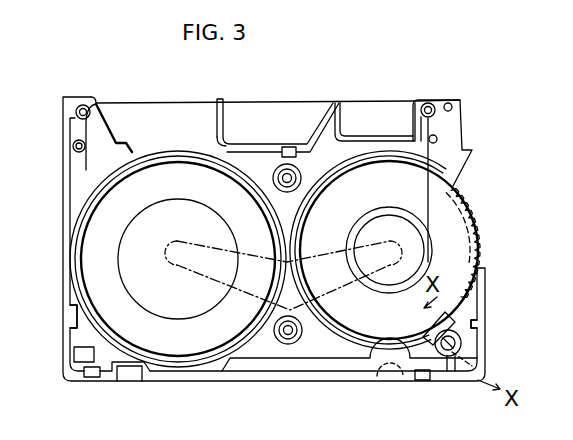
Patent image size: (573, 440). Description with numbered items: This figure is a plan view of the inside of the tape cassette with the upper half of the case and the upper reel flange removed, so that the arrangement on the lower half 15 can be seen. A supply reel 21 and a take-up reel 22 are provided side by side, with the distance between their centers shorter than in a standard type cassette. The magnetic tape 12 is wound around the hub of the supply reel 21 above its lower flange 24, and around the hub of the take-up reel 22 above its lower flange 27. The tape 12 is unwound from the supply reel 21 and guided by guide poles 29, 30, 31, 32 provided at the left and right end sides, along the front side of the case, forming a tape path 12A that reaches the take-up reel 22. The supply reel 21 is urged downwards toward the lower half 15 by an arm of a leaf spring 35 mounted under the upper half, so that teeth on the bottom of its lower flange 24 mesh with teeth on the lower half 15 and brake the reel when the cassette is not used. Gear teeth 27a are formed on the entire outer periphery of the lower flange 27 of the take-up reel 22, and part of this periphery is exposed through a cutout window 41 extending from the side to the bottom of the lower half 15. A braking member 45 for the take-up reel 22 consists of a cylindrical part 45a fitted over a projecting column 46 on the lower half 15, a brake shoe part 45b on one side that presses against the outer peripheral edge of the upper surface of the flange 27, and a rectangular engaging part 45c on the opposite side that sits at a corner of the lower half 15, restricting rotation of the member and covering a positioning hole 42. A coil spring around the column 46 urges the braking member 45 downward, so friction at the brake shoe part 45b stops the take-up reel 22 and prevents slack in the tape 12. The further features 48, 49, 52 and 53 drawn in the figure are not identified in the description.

The magnetic tape 12 is at (84, 168).
The tape path 12A is at (263, 102).
The lower half 15 is at (275, 375).
The supply reel 21 is at (68, 280).
The take-up reel 22 is at (352, 344).
The lower flange 24 is at (76, 252).
The lower flange 27 is at (417, 250).
The gear teeth 27a is at (479, 236).
The guide pole 29 is at (73, 145).
The guide pole 30 is at (81, 106).
The guide pole 31 is at (430, 103).
The guide pole 32 is at (438, 139).
The leaf spring 35 is at (245, 289).
The cutout window 41 is at (457, 186).
The positioning hole 42 is at (474, 363).
The braking member 45 is at (454, 373).
The cylindrical part 45a is at (446, 357).
The brake shoe part 45b is at (428, 339).
The engaging part 45c is at (455, 372).
The projecting column 46 is at (460, 347).
The guide roller 48 is at (298, 174).
The guide roller 49 is at (299, 337).
The notch 52 is at (70, 317).
The notch 53 is at (480, 320).